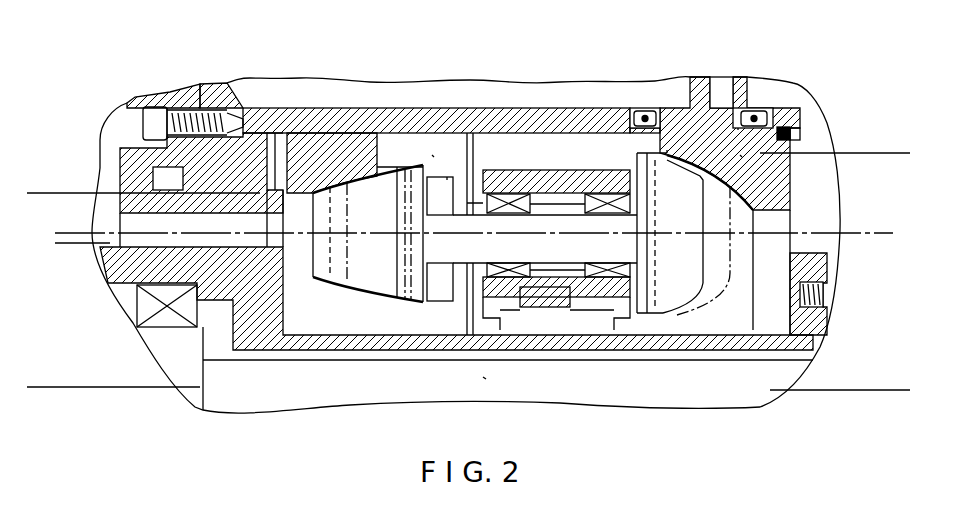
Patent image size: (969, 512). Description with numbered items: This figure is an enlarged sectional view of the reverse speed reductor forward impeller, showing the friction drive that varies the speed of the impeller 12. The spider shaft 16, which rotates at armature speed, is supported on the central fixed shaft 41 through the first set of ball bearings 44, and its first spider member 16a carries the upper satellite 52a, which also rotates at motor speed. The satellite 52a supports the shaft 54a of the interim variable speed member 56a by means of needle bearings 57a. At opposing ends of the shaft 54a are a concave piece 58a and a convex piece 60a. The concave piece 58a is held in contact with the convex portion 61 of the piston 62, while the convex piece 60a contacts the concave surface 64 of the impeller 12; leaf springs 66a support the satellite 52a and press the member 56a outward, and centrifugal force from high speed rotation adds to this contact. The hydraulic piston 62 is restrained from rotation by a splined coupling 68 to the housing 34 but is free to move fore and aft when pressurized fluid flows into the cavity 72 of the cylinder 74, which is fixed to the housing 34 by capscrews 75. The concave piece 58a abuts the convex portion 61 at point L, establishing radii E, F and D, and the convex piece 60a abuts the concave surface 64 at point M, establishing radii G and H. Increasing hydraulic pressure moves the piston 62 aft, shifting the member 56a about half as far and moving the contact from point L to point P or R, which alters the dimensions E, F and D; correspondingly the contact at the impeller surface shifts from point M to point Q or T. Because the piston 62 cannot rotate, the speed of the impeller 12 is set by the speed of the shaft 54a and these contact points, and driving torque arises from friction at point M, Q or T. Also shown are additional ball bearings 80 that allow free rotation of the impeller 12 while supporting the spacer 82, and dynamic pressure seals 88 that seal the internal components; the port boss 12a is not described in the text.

The impeller 12 is at (717, 100).
The port boss 12a is at (697, 88).
The spider shaft 16 is at (267, 353).
The first spider member 16a is at (323, 343).
The housing 34 is at (172, 96).
The central fixed shaft 41 is at (483, 377).
The first set of ball bearings 44 is at (167, 307).
The upper satellite 52a is at (553, 182).
The shaft 54a is at (467, 250).
The interim variable speed member 56a is at (460, 160).
The needle bearings 57a is at (507, 192).
The concave piece 58a is at (363, 270).
The convex piece 60a is at (683, 273).
The convex portion 61 is at (396, 128).
The piston 62 is at (358, 148).
The concave surface 64 is at (756, 206).
The leaf springs 66a is at (552, 308).
The splined coupling 68 is at (342, 142).
The cavity 72 is at (157, 183).
The cylinder 74 is at (190, 145).
The capscrews 75 is at (186, 118).
The additional ball bearings 80 is at (790, 136).
The spacer 82 is at (800, 130).
The dynamic pressure seals 88 is at (641, 110).
The point of contact L is at (343, 187).
The point of contact P is at (447, 177).
The point of contact R is at (432, 155).
The point of contact M is at (667, 153).
The point of contact Q is at (738, 130).
The point of contact T is at (740, 157).
The radius D is at (37, 193).
The radius E is at (65, 165).
The radius F is at (65, 243).
The radius G is at (863, 153).
The radius H is at (895, 153).